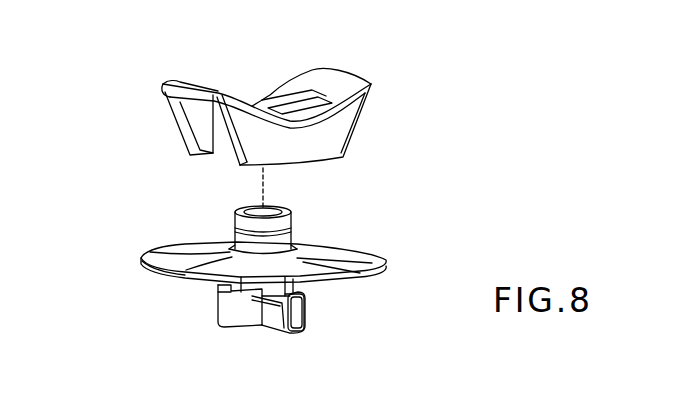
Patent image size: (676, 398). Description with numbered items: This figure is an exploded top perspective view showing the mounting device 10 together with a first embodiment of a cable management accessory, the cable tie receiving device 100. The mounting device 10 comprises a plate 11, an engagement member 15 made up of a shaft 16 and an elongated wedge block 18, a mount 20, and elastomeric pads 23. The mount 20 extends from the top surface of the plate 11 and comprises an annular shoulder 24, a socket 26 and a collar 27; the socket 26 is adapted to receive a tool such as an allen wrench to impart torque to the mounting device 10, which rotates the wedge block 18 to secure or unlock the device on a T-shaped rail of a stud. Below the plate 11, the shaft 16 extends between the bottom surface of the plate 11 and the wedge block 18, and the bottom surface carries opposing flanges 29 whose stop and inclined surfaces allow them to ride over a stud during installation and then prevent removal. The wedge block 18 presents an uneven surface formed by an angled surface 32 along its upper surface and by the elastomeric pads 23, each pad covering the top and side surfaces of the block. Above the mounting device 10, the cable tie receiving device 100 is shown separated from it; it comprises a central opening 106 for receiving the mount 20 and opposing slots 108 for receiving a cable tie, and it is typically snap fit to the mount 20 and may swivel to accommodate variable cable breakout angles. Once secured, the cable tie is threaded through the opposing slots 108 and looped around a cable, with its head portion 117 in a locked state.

The cable tie receiving device 100 is at (183, 63).
The central opening 106 is at (273, 105).
The opposing slots 108 is at (283, 82).
The mounting device 10 is at (362, 244).
The plate 11 is at (384, 265).
The collar 27 is at (233, 248).
The mount 20 is at (296, 224).
The socket 26 is at (273, 210).
The annular shoulder 24 is at (233, 216).
The opposing flanges 29 is at (193, 280).
The engagement member 15 is at (217, 325).
The shaft 16 is at (297, 285).
The elongated wedge block 18 is at (227, 307).
The elastomeric pads 23 is at (307, 313).
The angled surface 32 is at (252, 298).
The head portion 117 is at (586, 397).